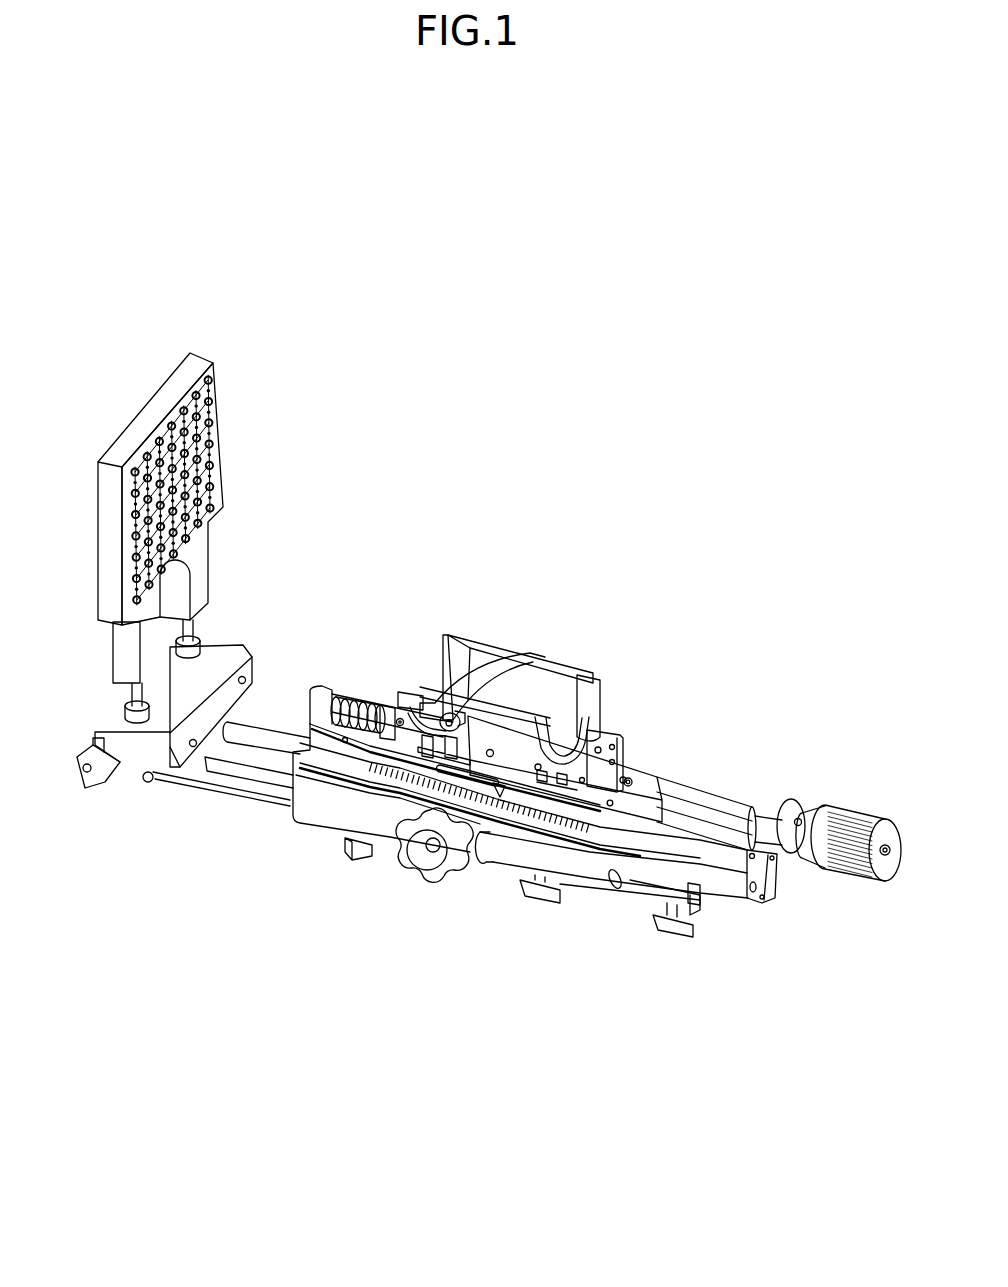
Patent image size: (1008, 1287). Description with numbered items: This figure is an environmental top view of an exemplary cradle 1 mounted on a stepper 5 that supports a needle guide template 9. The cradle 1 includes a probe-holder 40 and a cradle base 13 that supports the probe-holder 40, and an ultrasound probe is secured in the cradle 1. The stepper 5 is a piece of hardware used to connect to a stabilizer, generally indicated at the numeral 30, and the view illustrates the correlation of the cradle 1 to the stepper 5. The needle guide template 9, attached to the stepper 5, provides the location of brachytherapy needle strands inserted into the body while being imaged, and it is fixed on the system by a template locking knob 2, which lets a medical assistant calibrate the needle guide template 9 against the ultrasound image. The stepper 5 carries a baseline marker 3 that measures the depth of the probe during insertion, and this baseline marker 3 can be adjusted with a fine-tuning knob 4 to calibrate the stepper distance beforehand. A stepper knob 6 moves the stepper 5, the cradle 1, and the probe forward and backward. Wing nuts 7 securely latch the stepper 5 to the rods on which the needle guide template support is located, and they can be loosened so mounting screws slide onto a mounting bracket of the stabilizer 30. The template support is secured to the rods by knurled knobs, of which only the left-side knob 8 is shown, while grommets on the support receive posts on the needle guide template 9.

The cradle 1 is at (510, 650).
The template locking knob 2 is at (92, 782).
The baseline marker 3 is at (497, 793).
The fine-tuning knob 4 is at (825, 815).
The stepper 5 is at (655, 770).
The stepper knob 6 is at (412, 877).
The wing nuts 7 is at (353, 853).
The left-side knob 8 is at (148, 777).
The needle guide template 9 is at (197, 556).
The cradle base 13 is at (630, 727).
The stabilizer 30 is at (650, 912).
The probe-holder 40 is at (602, 660).